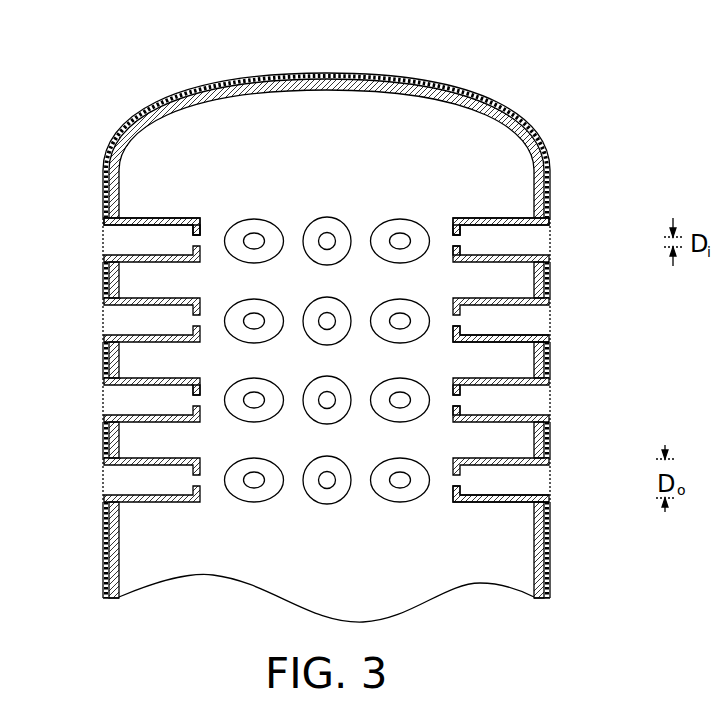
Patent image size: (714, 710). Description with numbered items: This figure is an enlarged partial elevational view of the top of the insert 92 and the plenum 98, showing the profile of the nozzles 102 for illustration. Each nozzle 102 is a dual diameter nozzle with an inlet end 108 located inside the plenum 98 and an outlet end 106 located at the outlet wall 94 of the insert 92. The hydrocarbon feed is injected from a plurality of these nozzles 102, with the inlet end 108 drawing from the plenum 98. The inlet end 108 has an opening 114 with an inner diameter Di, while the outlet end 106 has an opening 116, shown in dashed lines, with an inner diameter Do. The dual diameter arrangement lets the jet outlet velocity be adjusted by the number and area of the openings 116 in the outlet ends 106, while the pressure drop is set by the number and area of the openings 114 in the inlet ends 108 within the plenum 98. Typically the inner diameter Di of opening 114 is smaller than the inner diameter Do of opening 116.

The insert 92 is at (332, 72).
The outlet wall 94 is at (548, 358).
The plenum 98 is at (356, 187).
The nozzle 102 is at (158, 199).
The outlet end 106 is at (103, 241).
The inlet end 108 is at (198, 243).
The opening 114 is at (320, 240).
The opening 116 is at (307, 410).